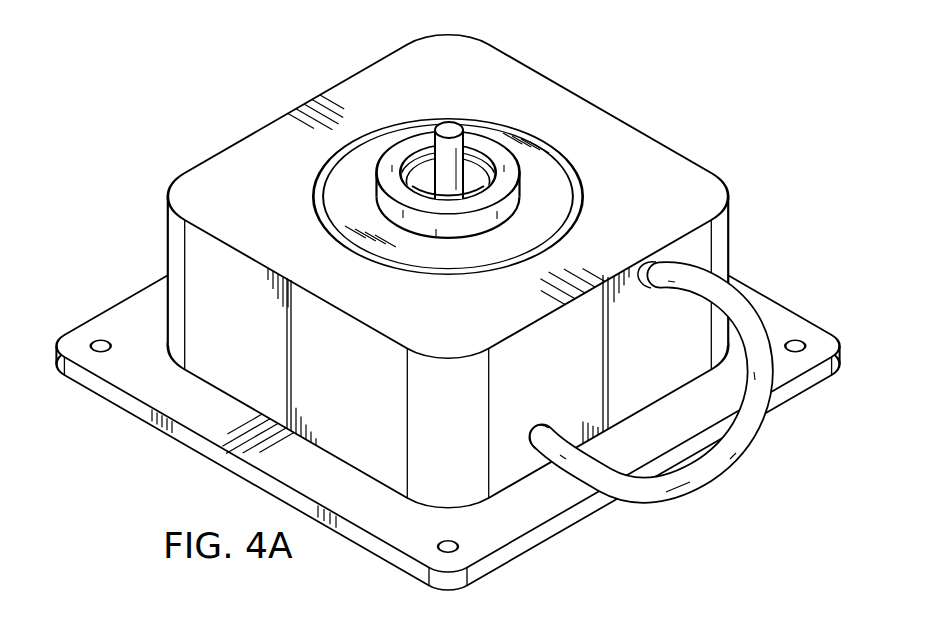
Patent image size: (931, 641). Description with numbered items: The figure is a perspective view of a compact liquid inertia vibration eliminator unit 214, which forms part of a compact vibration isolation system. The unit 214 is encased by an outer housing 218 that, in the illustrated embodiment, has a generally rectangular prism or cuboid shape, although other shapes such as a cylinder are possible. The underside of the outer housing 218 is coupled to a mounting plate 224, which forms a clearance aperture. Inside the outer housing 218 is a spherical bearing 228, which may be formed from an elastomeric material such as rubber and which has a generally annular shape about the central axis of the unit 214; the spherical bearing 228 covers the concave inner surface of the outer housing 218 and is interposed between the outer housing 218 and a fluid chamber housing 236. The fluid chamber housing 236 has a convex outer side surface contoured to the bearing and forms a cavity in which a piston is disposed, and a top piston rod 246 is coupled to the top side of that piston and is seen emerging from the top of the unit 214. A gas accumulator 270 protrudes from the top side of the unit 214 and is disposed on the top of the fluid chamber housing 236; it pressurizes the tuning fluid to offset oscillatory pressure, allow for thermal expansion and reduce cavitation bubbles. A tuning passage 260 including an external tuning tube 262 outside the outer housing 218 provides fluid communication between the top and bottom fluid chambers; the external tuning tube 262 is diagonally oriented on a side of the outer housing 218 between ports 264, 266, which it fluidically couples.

The compact liquid inertia vibration eliminator unit 214 is at (179, 74).
The outer housing 218 is at (668, 157).
The mounting plate 224 is at (117, 318).
The spherical bearing 228 is at (444, 272).
The fluid chamber housing 236 is at (330, 185).
The top piston rod 246 is at (447, 127).
The gas accumulator 270 is at (480, 140).
The tuning passage 260 is at (664, 505).
The external tuning tube 262 is at (657, 386).
The port 264 is at (529, 440).
The port 266 is at (643, 281).